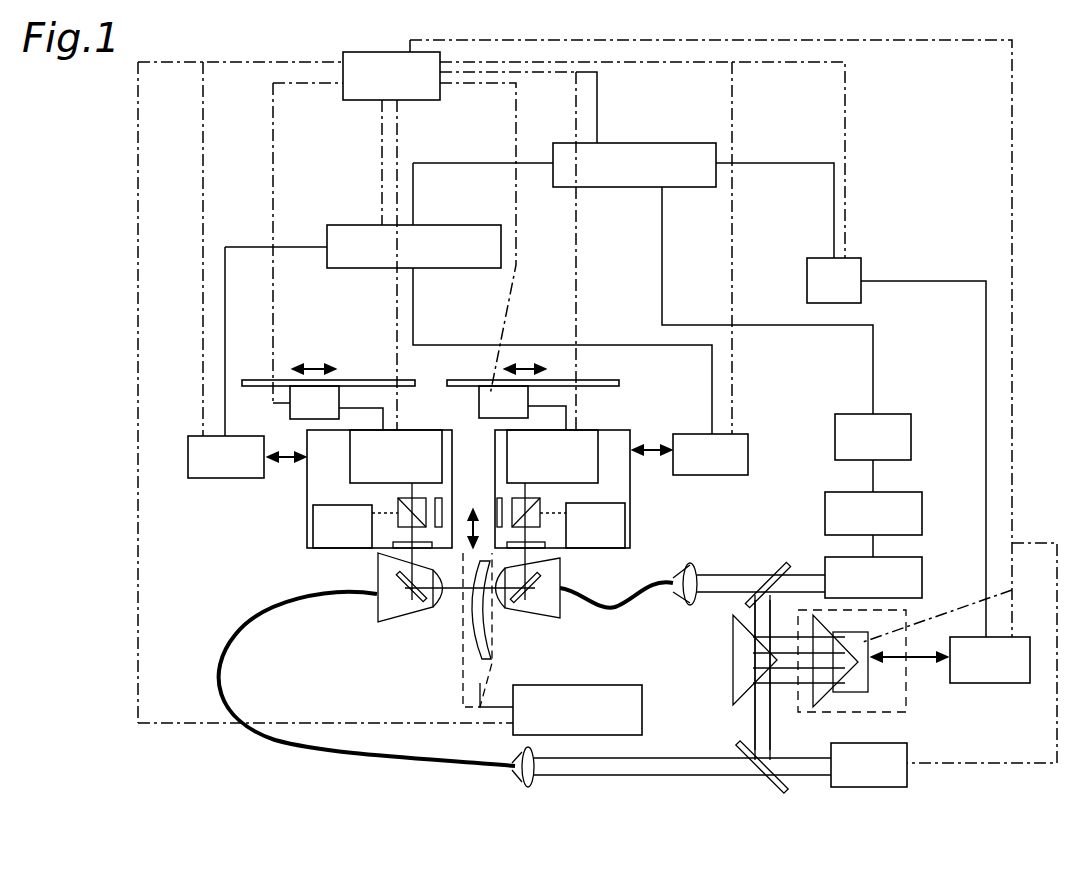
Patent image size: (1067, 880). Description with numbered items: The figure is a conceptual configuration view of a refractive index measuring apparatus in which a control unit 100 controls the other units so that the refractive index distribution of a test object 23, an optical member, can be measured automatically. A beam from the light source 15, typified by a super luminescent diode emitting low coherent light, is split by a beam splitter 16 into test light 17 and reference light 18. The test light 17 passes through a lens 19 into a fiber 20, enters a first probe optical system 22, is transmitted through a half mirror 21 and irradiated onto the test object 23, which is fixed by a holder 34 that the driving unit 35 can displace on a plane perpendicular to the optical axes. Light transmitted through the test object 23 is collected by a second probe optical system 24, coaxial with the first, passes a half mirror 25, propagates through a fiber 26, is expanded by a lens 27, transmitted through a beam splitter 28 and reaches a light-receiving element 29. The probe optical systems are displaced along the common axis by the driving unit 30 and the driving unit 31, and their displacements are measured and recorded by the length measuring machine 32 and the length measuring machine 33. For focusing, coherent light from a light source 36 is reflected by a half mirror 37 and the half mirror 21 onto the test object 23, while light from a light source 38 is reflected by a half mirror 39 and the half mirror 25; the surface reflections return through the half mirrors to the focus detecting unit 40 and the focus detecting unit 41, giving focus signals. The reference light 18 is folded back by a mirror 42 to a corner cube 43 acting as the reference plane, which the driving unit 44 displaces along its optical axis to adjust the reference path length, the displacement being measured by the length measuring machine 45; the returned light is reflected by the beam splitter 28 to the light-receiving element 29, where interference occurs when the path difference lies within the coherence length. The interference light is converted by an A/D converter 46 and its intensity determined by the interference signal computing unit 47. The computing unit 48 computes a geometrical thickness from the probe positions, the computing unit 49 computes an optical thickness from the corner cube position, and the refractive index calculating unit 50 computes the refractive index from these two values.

The control unit 100 is at (375, 51).
The refractive index calculating unit 50 is at (639, 153).
The computing unit 48 is at (338, 225).
The computing unit 49 is at (855, 258).
The driving unit 30 is at (312, 395).
The driving unit 31 is at (518, 396).
The focus detecting unit 40 is at (425, 440).
The focus detecting unit 41 is at (587, 438).
The length measuring machine 32 is at (215, 470).
The length measuring machine 33 is at (744, 438).
The light source 36 is at (333, 537).
The half mirror 37 is at (418, 500).
The half mirror 39 is at (542, 502).
The light source 38 is at (615, 531).
The fiber 26 is at (641, 580).
The lens 27 is at (694, 568).
The beam splitter 28 is at (769, 575).
The light-receiving element 29 is at (915, 583).
The first probe optical system 22 is at (376, 597).
The half mirror 21 is at (412, 607).
The test object 23 is at (468, 632).
The half mirror 25 is at (525, 607).
The second probe optical system 24 is at (557, 603).
The fiber 20 is at (337, 752).
The lens 19 is at (530, 790).
The test light 17 is at (675, 768).
The beam splitter 16 is at (780, 795).
The light source 15 is at (858, 788).
The reference light 18 is at (757, 712).
The mirror 42 is at (735, 654).
The corner cube 43 is at (828, 708).
The driving unit 44 is at (857, 683).
The length measuring machine 45 is at (1008, 675).
The interference signal computing unit 47 is at (897, 420).
The A/D converter 46 is at (915, 518).
The driving unit 35 is at (625, 695).
The holder 34 is at (462, 688).